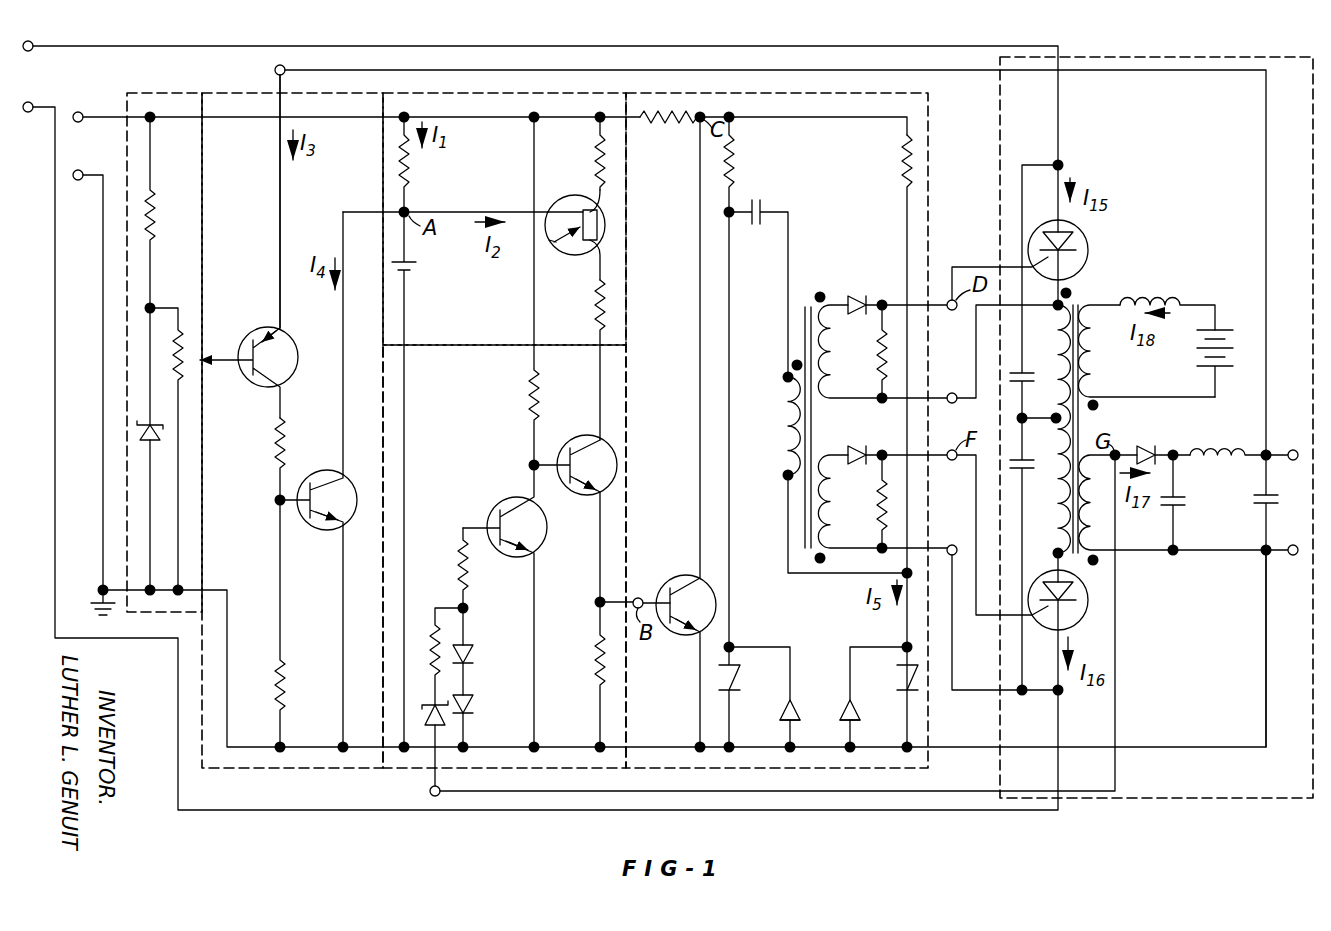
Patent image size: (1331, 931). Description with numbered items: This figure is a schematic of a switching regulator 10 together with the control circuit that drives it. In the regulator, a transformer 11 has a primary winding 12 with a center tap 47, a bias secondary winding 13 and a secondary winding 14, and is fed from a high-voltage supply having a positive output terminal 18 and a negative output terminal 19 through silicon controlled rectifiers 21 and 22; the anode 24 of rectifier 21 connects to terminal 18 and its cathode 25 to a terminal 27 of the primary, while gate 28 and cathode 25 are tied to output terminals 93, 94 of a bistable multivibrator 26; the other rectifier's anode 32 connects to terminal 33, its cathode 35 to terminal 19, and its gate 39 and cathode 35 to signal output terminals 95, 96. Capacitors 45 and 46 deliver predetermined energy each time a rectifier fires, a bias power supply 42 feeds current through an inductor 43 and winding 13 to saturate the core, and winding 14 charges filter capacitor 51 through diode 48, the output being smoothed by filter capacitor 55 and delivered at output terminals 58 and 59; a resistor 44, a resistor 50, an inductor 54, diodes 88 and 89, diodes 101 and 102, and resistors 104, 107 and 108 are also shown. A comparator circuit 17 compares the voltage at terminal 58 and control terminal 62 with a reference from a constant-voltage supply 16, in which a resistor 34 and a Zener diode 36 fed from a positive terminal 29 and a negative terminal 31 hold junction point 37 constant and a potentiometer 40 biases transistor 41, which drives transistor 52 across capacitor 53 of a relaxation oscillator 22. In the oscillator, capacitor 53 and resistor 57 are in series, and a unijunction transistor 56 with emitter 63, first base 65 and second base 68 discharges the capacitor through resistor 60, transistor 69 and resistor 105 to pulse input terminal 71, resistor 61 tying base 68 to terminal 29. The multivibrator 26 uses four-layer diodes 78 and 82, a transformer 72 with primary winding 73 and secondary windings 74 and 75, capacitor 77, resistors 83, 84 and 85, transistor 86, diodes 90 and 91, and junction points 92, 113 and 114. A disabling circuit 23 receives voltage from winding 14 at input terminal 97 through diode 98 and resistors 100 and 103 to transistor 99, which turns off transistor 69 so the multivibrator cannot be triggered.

The switching regulator 10 is at (1128, 57).
The transformer 11 is at (1110, 301).
The primary winding 12 is at (1058, 486).
The bias secondary winding 13 is at (1092, 344).
The secondary winding 14 is at (1100, 482).
The constant-voltage supply 16 is at (176, 93).
The comparator circuit 17 is at (333, 768).
The positive output terminal 18 is at (30, 46).
The negative output terminal 19 is at (28, 112).
The silicon controlled rectifier 21 is at (1121, 253).
The relaxation oscillator 22 is at (430, 93).
The disabling circuit 23 is at (550, 768).
The anode 24 is at (1058, 228).
The cathode 25 is at (1080, 266).
The bistable multivibrator 26 is at (918, 93).
The terminal 27 is at (1058, 314).
The gate 28 is at (1050, 270).
The positive terminal 29 is at (82, 114).
The negative terminal 31 is at (84, 178).
The anode 32 is at (1052, 584).
The terminal 33 is at (1056, 560).
The resistor 34 is at (157, 198).
The cathode 35 is at (1078, 616).
The Zener diode 36 is at (160, 435).
The junction point 37 is at (150, 308).
The gate 39 is at (1052, 626).
The potentiometer 40 is at (180, 376).
The transistor 41 is at (322, 343).
The bias power supply 42 is at (1196, 332).
The inductor 43 is at (1165, 285).
The resistor 44 is at (276, 440).
The capacitor 45 is at (1040, 376).
The capacitor 46 is at (1040, 462).
The center tap 47 is at (1056, 416).
The diode 48 is at (1146, 450).
The resistor 50 is at (288, 696).
The filter capacitor 51 is at (1186, 496).
The transistor 52 is at (333, 469).
The capacitor 53 is at (417, 272).
The inductor 54 is at (1235, 439).
The filter capacitor 55 is at (1258, 514).
The unijunction transistor 56 is at (571, 203).
The resistor 57 is at (414, 196).
The output terminal 58 is at (1296, 452).
The output terminal 59 is at (1290, 556).
The resistor 60 is at (598, 318).
The resistor 61 is at (596, 146).
The control terminal 62 is at (275, 70).
The emitter 63 is at (552, 250).
The first base 65 is at (600, 262).
The second base 68 is at (600, 176).
The transistor 69 is at (592, 436).
The input terminal 71 is at (638, 598).
The transformer 72 is at (838, 291).
The primary winding 73 is at (788, 384).
The secondary winding 74 is at (836, 340).
The secondary winding 75 is at (836, 510).
The capacitor 77 is at (760, 226).
The four-layer diode 78 is at (742, 672).
The four-layer diode 82 is at (896, 668).
The resistor 83 is at (738, 168).
The resistor 84 is at (896, 172).
The resistor 85 is at (658, 124).
The transistor 86 is at (696, 583).
The diode 88 is at (850, 300).
The diode 89 is at (848, 452).
The diode 90 is at (784, 716).
The diode 91 is at (860, 716).
The junction point 92 is at (698, 124).
The output terminal 93 is at (952, 310).
The output terminal 94 is at (950, 394).
The signal output terminal 95 is at (954, 460).
The signal output terminal 96 is at (968, 554).
The input terminal 97 is at (430, 790).
The diode 98 is at (426, 708).
The transistor 99 is at (577, 533).
The resistor 100 is at (430, 622).
The diode 101 is at (474, 658).
The diode 102 is at (474, 708).
The resistor 103 is at (470, 580).
The resistor 104 is at (532, 384).
The resistor 105 is at (592, 656).
The resistor 107 is at (878, 376).
The resistor 108 is at (878, 528).
The junction point 113 is at (904, 644).
The junction point 114 is at (738, 212).